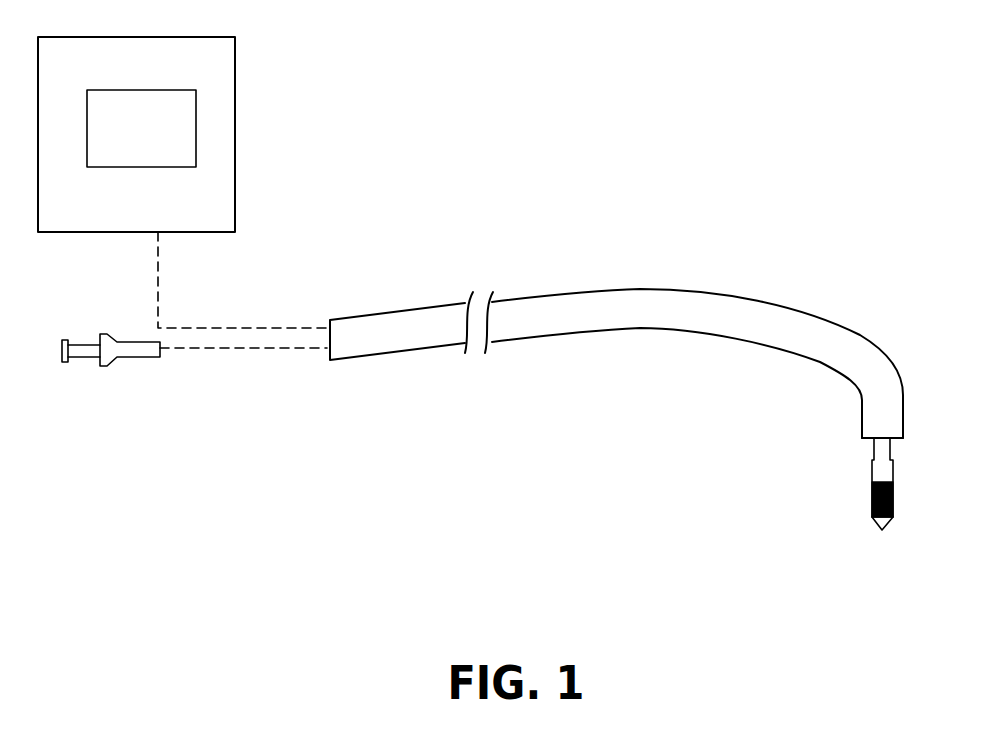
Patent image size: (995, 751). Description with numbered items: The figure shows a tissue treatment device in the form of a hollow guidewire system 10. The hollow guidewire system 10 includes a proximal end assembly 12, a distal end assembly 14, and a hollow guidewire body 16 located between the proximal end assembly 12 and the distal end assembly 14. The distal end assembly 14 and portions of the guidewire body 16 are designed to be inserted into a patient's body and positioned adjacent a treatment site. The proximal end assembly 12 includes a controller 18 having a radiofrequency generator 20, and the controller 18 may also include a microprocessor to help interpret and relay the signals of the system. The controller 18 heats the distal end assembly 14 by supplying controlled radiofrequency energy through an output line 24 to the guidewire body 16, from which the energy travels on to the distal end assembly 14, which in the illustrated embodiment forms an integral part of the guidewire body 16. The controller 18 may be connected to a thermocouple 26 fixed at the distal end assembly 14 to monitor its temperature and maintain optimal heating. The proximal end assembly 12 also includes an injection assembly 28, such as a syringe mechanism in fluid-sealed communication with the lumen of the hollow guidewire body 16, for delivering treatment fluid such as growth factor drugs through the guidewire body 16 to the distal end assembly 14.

The hollow guidewire system 10 is at (528, 158).
The proximal end assembly 12 is at (168, 423).
The distal end assembly 14 is at (833, 516).
The hollow guidewire body 16 is at (695, 310).
The controller 18 is at (265, 88).
The radiofrequency generator 20 is at (141, 128).
The output line 24 is at (227, 328).
The thermocouple 26 is at (872, 473).
The injection assembly 28 is at (110, 355).